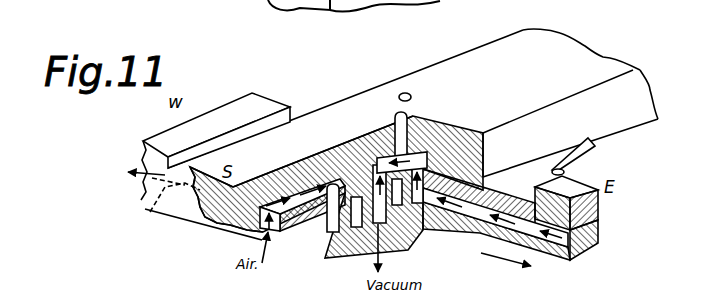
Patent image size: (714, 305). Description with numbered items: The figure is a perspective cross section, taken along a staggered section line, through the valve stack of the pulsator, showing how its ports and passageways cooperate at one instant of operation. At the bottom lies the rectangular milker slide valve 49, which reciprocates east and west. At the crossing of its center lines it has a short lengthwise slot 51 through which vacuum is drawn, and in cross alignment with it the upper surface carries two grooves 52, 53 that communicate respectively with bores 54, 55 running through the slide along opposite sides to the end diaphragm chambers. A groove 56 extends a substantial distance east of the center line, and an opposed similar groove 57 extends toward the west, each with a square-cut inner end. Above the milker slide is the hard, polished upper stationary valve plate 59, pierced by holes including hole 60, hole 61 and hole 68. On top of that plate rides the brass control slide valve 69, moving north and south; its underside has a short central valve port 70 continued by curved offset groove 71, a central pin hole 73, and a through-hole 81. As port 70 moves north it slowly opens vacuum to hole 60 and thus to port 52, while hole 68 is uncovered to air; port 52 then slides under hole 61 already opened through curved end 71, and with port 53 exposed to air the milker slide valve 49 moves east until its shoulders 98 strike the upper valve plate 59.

The slide valve 49 is at (273, 110).
The shoulders 98 is at (563, 170).
The pin hole 73 is at (394, 113).
The through-hole 81 is at (410, 93).
The valve port 70 is at (412, 152).
The offset groove 71 is at (422, 152).
The hole 60 is at (432, 152).
The control slide valve 69 is at (610, 58).
The upper stationary valve plate 59 is at (589, 140).
The groove 52 is at (480, 165).
The bore 54 is at (627, 248).
The groove 56 is at (414, 224).
The bore 55 is at (150, 209).
The hole 68 is at (322, 228).
The groove 53 is at (340, 240).
The groove 57 is at (352, 240).
The hole 61 is at (377, 233).
The lengthwise slot 51 is at (380, 224).